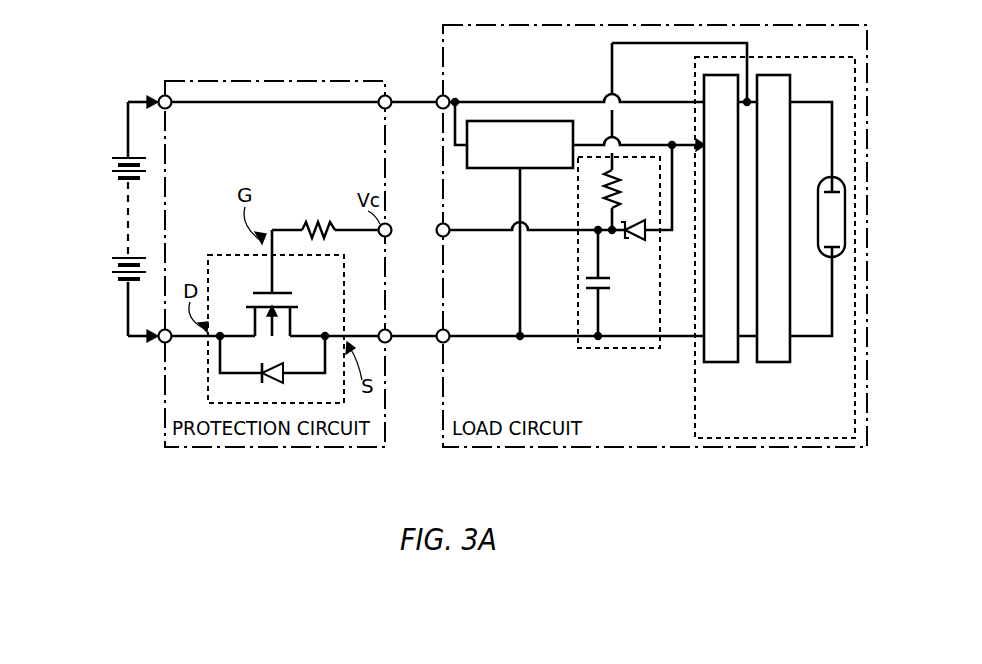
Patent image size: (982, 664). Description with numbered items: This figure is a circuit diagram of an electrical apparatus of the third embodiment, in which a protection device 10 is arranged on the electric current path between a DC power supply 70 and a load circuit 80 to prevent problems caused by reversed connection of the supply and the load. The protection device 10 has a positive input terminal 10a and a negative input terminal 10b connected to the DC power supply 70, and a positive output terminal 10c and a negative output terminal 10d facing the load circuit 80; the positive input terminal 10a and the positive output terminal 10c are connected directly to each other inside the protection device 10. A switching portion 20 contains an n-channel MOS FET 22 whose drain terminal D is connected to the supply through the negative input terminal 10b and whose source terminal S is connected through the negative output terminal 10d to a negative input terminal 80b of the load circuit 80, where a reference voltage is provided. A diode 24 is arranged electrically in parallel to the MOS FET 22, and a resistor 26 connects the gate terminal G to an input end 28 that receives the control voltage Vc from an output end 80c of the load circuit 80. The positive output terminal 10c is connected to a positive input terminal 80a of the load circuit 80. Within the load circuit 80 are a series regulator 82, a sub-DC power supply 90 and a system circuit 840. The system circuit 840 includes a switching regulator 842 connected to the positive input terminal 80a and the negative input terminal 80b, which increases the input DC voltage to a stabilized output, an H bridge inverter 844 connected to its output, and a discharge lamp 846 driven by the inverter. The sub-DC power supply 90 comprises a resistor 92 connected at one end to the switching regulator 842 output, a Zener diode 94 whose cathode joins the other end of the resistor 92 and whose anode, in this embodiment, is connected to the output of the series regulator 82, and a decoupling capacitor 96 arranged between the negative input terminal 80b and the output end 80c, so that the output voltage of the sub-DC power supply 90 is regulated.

The protection device 10 is at (213, 449).
The positive input terminal 10a is at (163, 96).
The negative input terminal 10b is at (163, 343).
The positive output terminal 10c is at (388, 110).
The negative output terminal 10d is at (388, 344).
The DC power supply 70 is at (128, 217).
The switching portion 20 is at (219, 254).
The n-channel type MOS FET 22 is at (252, 292).
The diode 24 is at (285, 378).
The resistor 26 is at (316, 222).
The input end 28 is at (389, 240).
The load circuit 80 is at (493, 449).
The positive input terminal 80a is at (440, 97).
The negative input terminal 80b is at (440, 331).
The output end 80c is at (440, 225).
The series regulator 82 is at (492, 170).
The sub-DC power supply 90 is at (620, 350).
The resistor 92 is at (619, 194).
The Zener diode 94 is at (633, 242).
The decoupling capacitor 96 is at (603, 292).
The system circuit 840 is at (695, 426).
The switching regulator 842 is at (725, 363).
The H bridge inverter 844 is at (775, 363).
The discharge lamp 846 is at (822, 178).